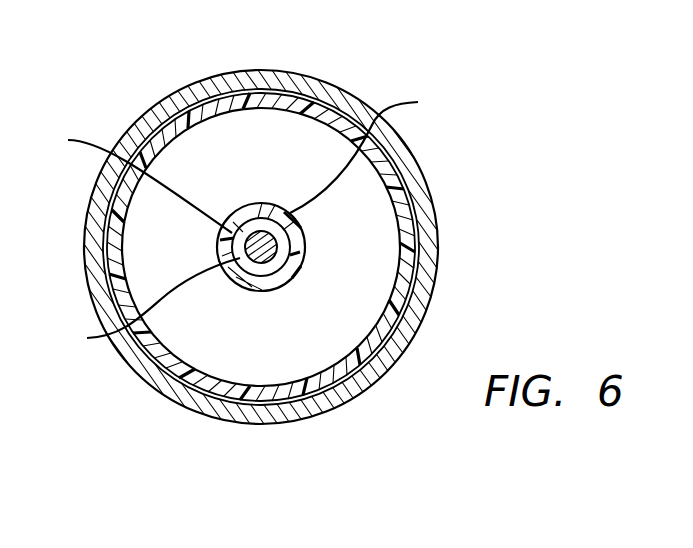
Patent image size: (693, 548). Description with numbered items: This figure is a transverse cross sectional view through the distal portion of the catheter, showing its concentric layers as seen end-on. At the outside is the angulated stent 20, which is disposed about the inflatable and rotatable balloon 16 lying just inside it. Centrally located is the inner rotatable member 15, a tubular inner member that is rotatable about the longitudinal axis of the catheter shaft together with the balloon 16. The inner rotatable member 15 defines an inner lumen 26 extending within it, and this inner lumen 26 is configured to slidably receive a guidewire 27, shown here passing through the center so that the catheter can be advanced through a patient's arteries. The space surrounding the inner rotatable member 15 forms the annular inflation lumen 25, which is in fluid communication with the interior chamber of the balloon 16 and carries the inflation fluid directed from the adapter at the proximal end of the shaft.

The inner rotatable member 15 is at (371, 151).
The inflatable and rotatable balloon 16 is at (398, 194).
The angulated stent 20 is at (436, 233).
The annular inflation lumen 25 is at (365, 280).
The inner lumen 26 is at (148, 305).
The guidewire 27 is at (137, 180).